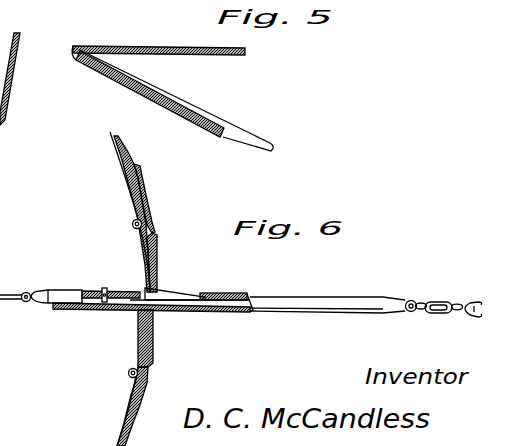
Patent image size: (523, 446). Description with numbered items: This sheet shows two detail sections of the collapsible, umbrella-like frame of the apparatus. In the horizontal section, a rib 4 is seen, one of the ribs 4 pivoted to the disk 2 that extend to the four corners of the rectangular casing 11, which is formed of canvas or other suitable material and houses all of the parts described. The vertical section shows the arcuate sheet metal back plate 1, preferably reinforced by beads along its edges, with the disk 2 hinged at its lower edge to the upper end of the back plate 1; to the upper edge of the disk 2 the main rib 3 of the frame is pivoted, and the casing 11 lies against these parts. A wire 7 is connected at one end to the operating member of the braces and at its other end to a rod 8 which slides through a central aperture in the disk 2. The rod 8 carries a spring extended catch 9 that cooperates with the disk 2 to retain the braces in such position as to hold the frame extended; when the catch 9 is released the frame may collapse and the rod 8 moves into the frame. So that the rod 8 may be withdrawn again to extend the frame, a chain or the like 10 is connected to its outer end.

In FIG. 6, the back plate 1 is at (127, 410).
In FIG. 6, the disk 2 is at (140, 257).
In FIG. 6, the main rib 3 is at (122, 160).
In FIG. 5, the ribs 4 is at (172, 98).
In FIG. 6, the wire 7 is at (13, 293).
In FIG. 6, the rod 8 is at (293, 298).
In FIG. 6, the spring extended catch 9 is at (168, 288).
In FIG. 6, the chain 10 is at (447, 285).
In FIG. 6, the casing 11 is at (151, 195).